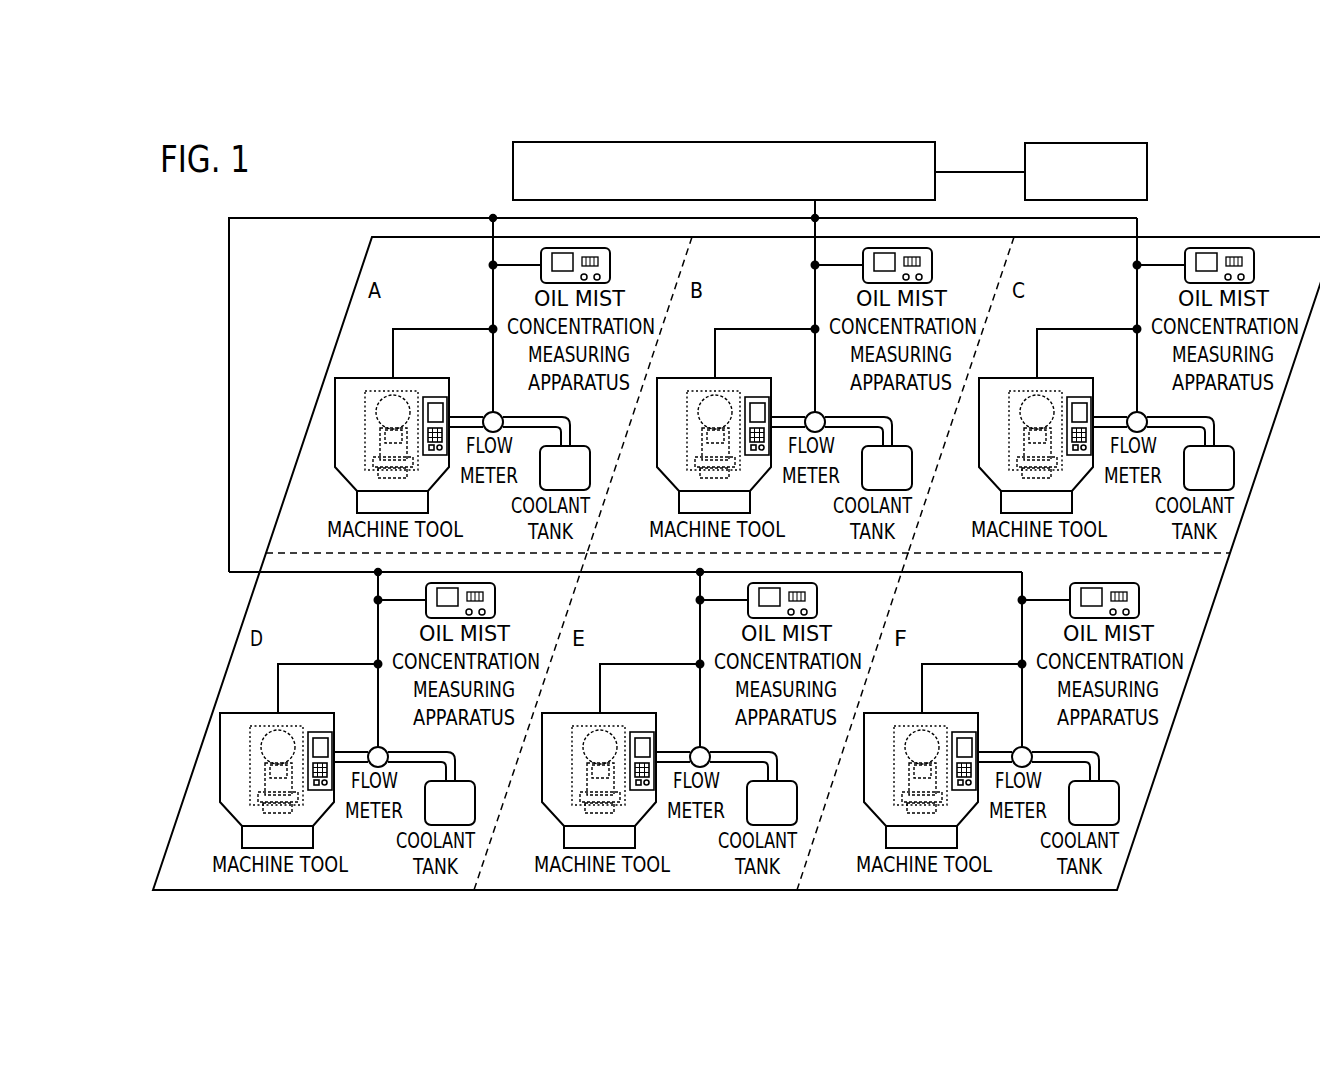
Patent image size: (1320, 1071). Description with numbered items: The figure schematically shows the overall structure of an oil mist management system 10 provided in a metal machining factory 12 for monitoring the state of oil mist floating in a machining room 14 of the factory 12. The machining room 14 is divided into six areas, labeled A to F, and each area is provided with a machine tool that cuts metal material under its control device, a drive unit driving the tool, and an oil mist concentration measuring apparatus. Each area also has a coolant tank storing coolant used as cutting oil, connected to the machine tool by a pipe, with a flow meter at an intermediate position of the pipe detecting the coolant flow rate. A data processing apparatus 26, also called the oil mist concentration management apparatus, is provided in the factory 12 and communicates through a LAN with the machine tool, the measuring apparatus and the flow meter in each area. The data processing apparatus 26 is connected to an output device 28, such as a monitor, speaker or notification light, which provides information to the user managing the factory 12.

The oil mist management system 10 is at (683, 368).
The metal machining factory 12 is at (297, 189).
The machining room 14 is at (1245, 232).
The data processing apparatus 26 is at (513, 164).
The output device 28 is at (1147, 170).